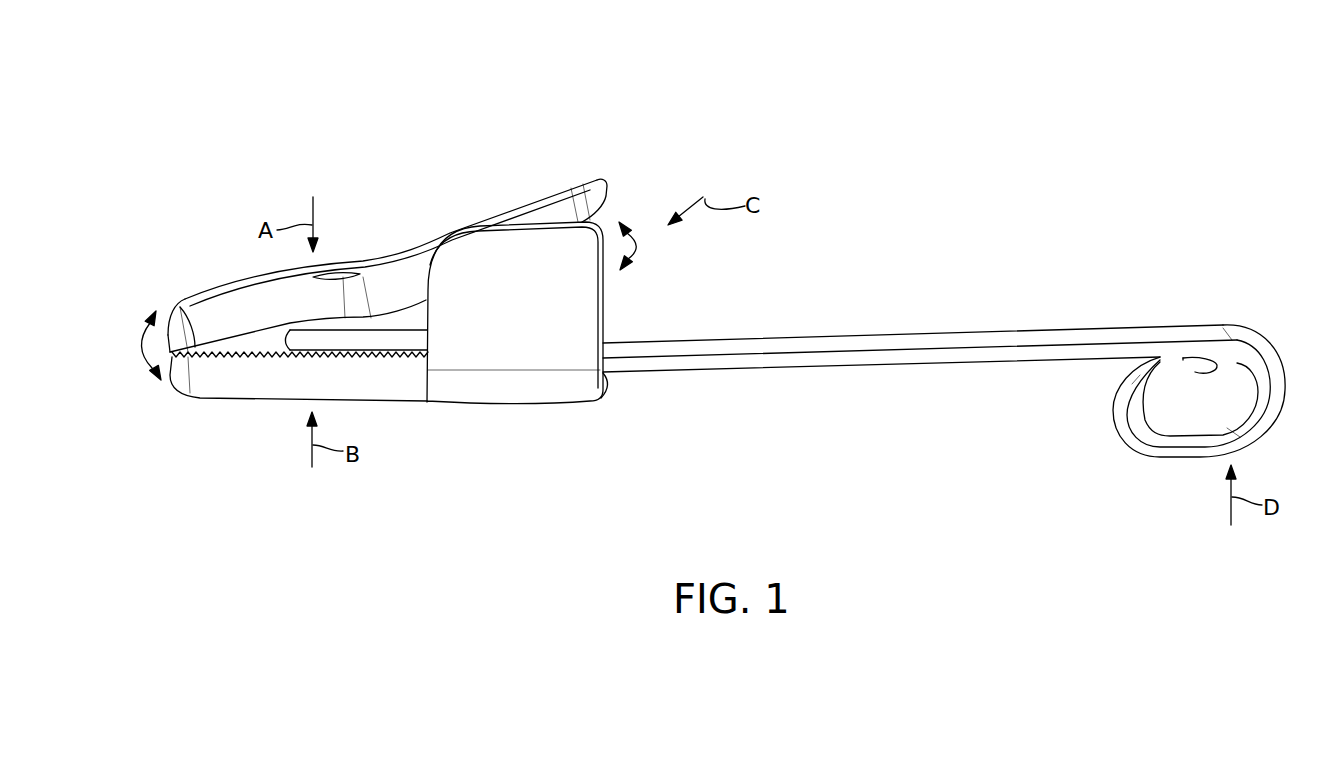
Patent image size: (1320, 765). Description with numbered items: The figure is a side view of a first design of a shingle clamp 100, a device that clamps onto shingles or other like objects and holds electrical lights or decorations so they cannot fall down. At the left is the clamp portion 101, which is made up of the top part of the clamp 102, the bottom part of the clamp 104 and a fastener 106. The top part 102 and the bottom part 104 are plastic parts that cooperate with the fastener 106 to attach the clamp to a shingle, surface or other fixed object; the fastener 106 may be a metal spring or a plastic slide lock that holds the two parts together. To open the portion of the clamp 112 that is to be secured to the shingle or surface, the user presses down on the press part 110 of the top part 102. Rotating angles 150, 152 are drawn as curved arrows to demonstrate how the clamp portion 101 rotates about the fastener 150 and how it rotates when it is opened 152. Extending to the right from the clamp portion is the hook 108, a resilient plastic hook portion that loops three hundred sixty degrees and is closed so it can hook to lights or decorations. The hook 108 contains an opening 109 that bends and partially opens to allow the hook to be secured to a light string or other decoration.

The shingle clamp 100 is at (1212, 34).
The clamp portion 101 is at (227, 303).
The top part of clamp 102 is at (348, 270).
The bottom part of clamp 104 is at (399, 402).
The fastener 106 is at (605, 305).
The hook 108 is at (1177, 448).
The opening 109 is at (1183, 357).
The press part 110 is at (571, 188).
The portion of the clamp to be secured 112 is at (195, 347).
The rotating angle about the fastener 150 is at (640, 246).
The rotating angle when opened 152 is at (138, 348).